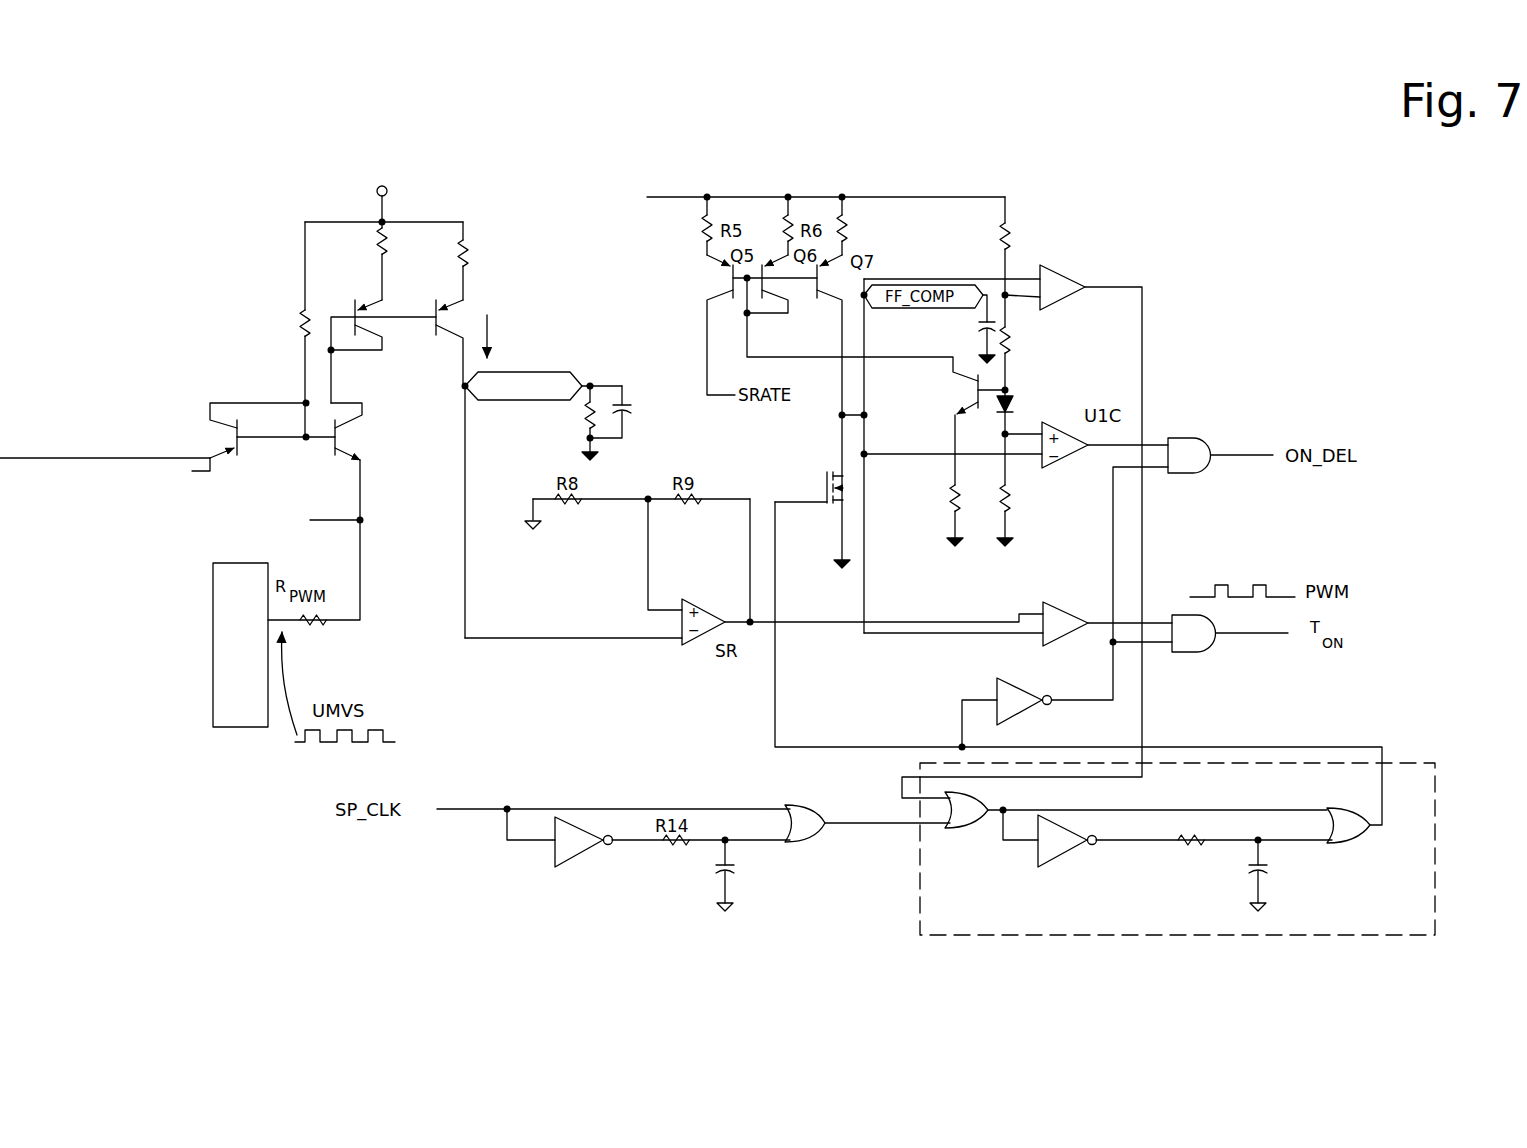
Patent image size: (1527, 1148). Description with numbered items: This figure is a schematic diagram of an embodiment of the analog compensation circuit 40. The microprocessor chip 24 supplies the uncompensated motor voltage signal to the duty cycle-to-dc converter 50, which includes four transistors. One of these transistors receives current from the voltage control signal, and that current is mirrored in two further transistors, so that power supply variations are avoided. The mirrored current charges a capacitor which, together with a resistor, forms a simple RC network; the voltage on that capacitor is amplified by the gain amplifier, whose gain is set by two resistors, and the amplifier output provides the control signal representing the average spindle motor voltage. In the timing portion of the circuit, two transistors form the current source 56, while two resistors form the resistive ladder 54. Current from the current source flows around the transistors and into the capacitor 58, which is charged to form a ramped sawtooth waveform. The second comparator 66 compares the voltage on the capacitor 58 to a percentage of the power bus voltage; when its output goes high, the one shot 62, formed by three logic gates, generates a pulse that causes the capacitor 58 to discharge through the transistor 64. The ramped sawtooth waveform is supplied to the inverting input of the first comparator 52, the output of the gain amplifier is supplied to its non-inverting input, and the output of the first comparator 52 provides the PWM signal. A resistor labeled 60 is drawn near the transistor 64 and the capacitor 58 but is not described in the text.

The microprocessor chip 24 is at (243, 727).
The analog compensation circuit 40 is at (1192, 160).
The duty cycle-to-dc converter 50 is at (250, 313).
The first comparator 52 is at (1050, 602).
The resistive ladder 54 is at (1028, 236).
The current source 56 is at (860, 238).
The capacitor 58 is at (975, 328).
The resistor 60 is at (942, 500).
The one shot 62 is at (900, 886).
The transistor 64 is at (822, 490).
The second comparator 66 is at (1062, 280).